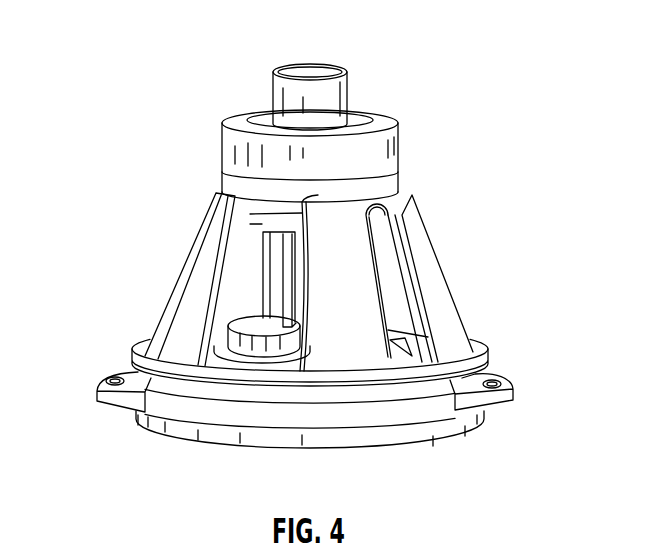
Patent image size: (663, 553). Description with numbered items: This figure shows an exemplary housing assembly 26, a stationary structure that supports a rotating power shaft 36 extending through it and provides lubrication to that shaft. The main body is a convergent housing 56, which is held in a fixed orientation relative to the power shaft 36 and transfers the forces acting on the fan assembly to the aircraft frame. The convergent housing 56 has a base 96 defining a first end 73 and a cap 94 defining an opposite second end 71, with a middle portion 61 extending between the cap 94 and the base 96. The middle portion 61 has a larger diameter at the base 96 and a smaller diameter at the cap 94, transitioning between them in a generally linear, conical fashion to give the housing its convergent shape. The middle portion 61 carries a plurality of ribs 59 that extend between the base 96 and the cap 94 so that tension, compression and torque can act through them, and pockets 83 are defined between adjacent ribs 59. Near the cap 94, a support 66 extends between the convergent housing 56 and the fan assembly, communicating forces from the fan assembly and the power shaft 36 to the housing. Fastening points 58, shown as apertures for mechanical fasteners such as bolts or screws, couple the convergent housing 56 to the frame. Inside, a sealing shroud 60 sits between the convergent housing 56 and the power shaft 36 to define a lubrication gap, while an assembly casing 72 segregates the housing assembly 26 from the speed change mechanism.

The housing assembly 26 is at (68, 91).
The power shaft 36 is at (350, 84).
The support 66 is at (400, 140).
The second end 71 is at (288, 170).
The cap 94 is at (222, 173).
The convergent housing 56 is at (460, 312).
The middle portion 61 is at (131, 231).
The ribs 59 is at (172, 288).
The fastening point 58 is at (357, 247).
The sealing shroud 60 is at (262, 260).
The pockets 83 is at (240, 286).
The base 96 is at (488, 350).
The first end 73 is at (271, 406).
The assembly casing 72 is at (466, 434).